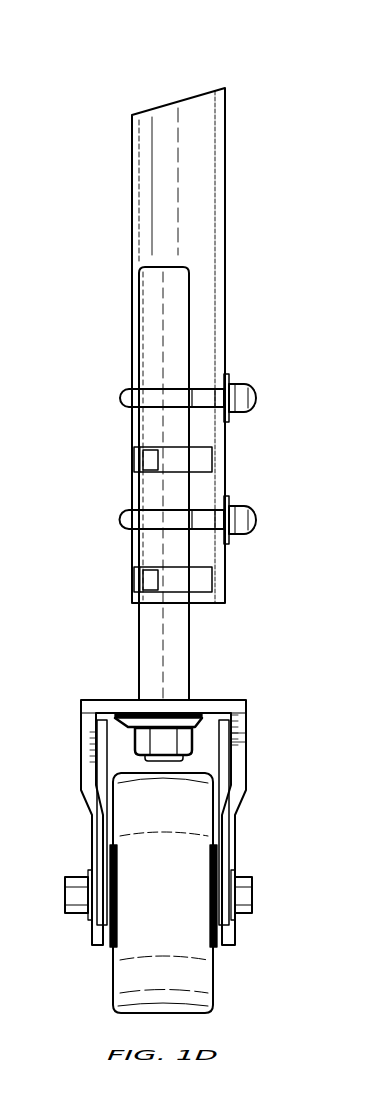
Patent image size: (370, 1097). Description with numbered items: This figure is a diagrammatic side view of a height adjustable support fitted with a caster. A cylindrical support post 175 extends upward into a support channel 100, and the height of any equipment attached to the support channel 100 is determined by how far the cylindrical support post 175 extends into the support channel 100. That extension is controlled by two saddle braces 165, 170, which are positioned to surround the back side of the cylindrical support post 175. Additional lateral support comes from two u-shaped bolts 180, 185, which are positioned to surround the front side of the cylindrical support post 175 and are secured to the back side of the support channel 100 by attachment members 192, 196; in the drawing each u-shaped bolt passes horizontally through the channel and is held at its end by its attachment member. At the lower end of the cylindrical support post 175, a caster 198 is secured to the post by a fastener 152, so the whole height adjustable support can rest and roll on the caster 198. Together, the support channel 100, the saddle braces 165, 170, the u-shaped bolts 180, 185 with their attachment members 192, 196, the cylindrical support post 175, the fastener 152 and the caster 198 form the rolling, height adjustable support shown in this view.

The support channel 100 is at (112, 156).
The cylindrical support post 175 is at (139, 303).
The u-shaped bolt 180 is at (205, 389).
The attachment member 192 is at (240, 412).
The saddle brace 165 is at (196, 457).
The u-shaped bolt 185 is at (205, 510).
The attachment member 196 is at (240, 534).
The saddle brace 170 is at (196, 578).
The fastener 152 is at (193, 742).
The caster 198 is at (246, 755).